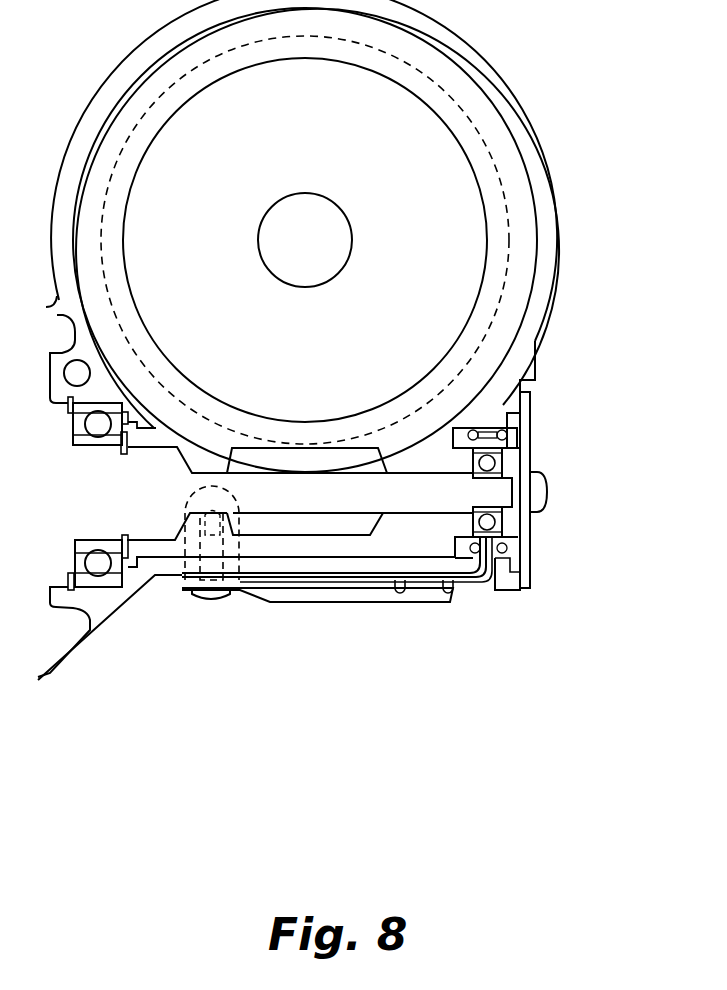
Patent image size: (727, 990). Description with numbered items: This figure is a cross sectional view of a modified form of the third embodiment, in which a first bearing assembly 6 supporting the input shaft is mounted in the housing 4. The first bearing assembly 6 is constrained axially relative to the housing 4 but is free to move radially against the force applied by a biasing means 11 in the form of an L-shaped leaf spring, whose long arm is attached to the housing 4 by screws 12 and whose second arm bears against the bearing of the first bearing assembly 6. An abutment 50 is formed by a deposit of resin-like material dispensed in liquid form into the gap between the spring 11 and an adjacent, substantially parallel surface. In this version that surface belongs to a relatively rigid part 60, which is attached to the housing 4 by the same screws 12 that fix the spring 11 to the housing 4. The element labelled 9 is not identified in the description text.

The wheel 9 is at (522, 153).
The housing 4 is at (522, 348).
The first bearing assembly 6 is at (502, 453).
The abutment 50 is at (443, 587).
The screws 12 is at (210, 608).
The relatively rigid part 60 is at (337, 605).
The biasing means 11 is at (410, 583).